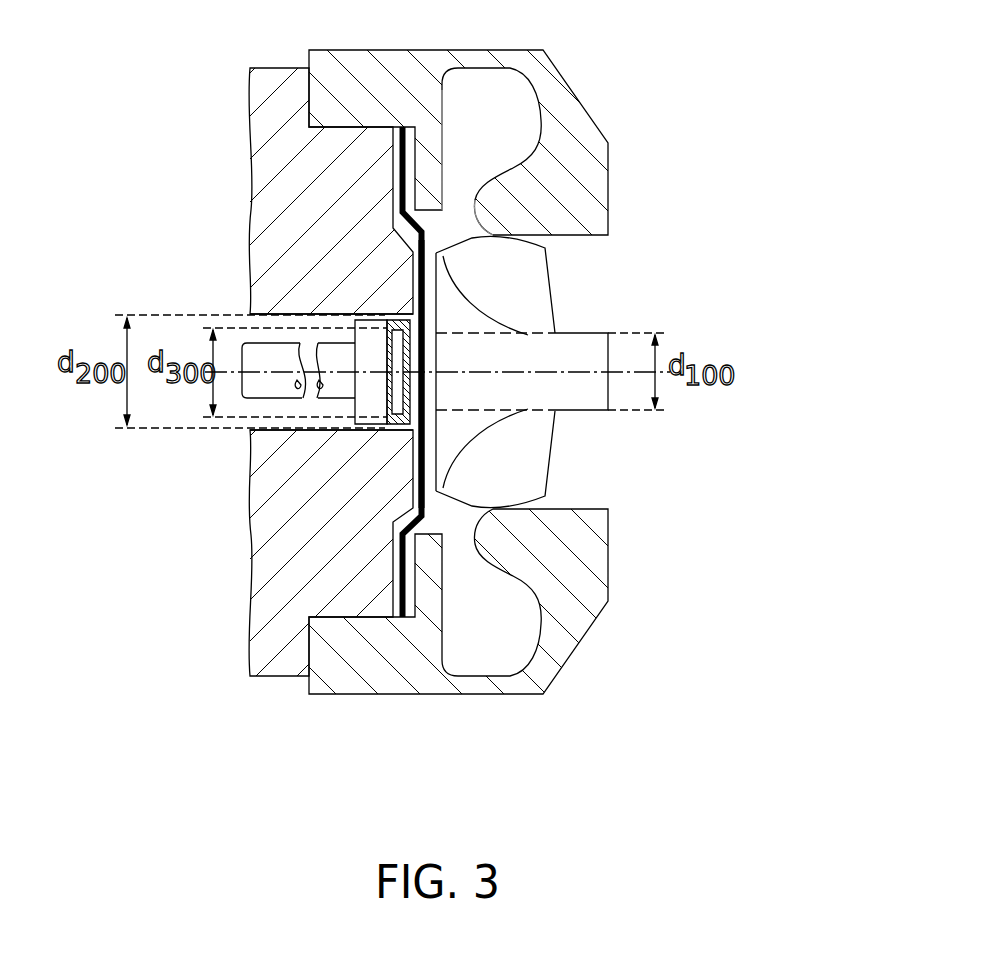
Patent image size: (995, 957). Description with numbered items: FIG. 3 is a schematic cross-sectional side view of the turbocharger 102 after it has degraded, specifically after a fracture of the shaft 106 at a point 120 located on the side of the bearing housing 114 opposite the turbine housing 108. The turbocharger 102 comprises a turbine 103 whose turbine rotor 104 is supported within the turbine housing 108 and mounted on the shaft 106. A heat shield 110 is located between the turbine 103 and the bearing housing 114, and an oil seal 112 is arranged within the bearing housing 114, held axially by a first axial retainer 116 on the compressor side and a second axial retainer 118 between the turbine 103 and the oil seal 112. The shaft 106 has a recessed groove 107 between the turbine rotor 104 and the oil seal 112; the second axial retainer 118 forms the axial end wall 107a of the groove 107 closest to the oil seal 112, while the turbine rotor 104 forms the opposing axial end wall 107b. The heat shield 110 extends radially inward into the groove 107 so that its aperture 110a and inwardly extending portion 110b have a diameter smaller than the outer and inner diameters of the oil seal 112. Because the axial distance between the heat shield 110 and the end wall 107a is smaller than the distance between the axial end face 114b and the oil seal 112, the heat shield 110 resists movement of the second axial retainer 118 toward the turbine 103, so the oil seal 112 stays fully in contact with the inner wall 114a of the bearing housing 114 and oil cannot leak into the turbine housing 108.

The turbocharger 102 is at (715, 81).
The turbine 103 is at (648, 574).
The turbine rotor 104 is at (483, 246).
The shaft 106 is at (272, 345).
The groove 107 is at (431, 411).
The axial end wall 107a is at (436, 244).
The opposing axial end wall 107b is at (437, 323).
The turbine housing 108 is at (583, 152).
The heat shield 110 is at (398, 175).
The aperture 110a is at (430, 337).
The portion of the heat shield 110b is at (425, 414).
The oil seal 112 is at (385, 425).
The bearing housing 114 is at (286, 137).
The inner wall 114a is at (328, 313).
The axial end face 114b is at (330, 431).
The first axial retainer 116 is at (413, 432).
The second axial retainer 118 is at (545, 650).
The point 120 is at (310, 398).